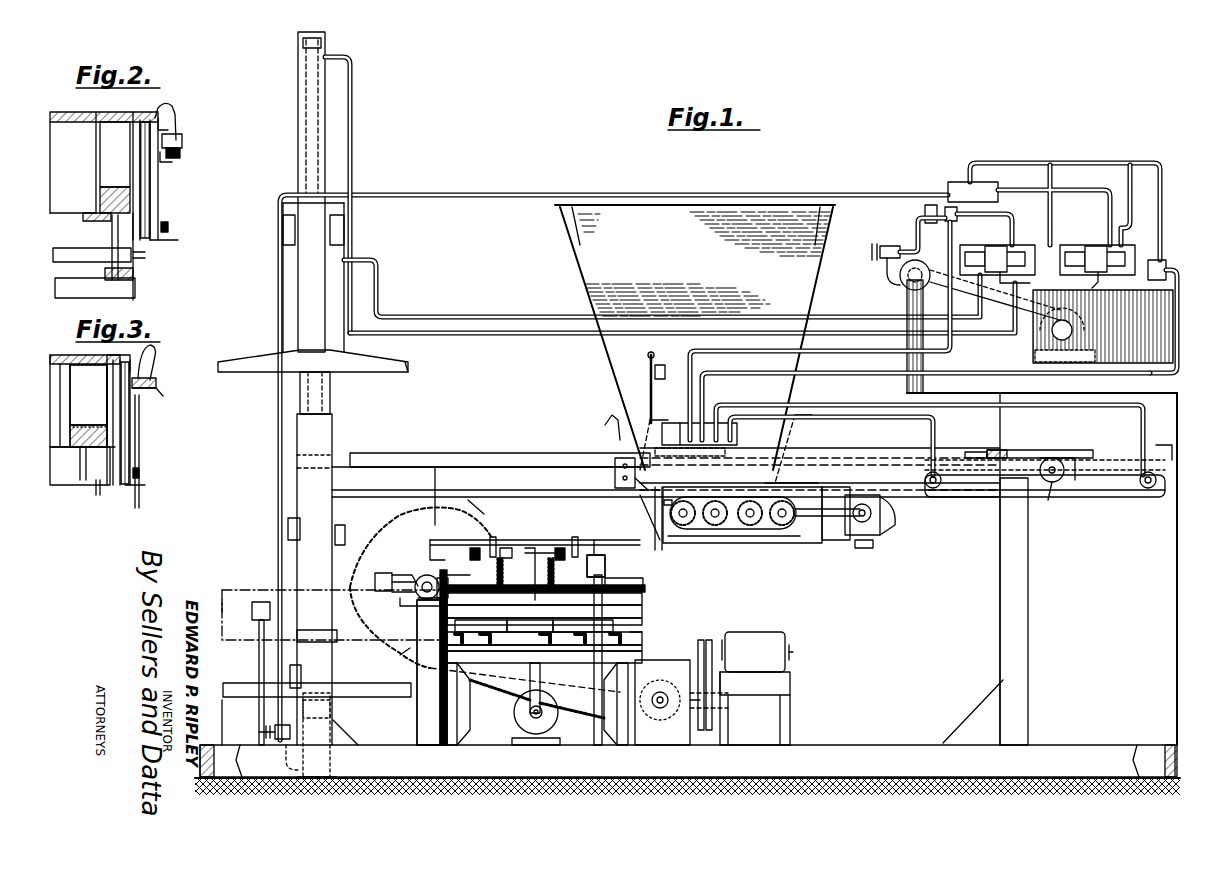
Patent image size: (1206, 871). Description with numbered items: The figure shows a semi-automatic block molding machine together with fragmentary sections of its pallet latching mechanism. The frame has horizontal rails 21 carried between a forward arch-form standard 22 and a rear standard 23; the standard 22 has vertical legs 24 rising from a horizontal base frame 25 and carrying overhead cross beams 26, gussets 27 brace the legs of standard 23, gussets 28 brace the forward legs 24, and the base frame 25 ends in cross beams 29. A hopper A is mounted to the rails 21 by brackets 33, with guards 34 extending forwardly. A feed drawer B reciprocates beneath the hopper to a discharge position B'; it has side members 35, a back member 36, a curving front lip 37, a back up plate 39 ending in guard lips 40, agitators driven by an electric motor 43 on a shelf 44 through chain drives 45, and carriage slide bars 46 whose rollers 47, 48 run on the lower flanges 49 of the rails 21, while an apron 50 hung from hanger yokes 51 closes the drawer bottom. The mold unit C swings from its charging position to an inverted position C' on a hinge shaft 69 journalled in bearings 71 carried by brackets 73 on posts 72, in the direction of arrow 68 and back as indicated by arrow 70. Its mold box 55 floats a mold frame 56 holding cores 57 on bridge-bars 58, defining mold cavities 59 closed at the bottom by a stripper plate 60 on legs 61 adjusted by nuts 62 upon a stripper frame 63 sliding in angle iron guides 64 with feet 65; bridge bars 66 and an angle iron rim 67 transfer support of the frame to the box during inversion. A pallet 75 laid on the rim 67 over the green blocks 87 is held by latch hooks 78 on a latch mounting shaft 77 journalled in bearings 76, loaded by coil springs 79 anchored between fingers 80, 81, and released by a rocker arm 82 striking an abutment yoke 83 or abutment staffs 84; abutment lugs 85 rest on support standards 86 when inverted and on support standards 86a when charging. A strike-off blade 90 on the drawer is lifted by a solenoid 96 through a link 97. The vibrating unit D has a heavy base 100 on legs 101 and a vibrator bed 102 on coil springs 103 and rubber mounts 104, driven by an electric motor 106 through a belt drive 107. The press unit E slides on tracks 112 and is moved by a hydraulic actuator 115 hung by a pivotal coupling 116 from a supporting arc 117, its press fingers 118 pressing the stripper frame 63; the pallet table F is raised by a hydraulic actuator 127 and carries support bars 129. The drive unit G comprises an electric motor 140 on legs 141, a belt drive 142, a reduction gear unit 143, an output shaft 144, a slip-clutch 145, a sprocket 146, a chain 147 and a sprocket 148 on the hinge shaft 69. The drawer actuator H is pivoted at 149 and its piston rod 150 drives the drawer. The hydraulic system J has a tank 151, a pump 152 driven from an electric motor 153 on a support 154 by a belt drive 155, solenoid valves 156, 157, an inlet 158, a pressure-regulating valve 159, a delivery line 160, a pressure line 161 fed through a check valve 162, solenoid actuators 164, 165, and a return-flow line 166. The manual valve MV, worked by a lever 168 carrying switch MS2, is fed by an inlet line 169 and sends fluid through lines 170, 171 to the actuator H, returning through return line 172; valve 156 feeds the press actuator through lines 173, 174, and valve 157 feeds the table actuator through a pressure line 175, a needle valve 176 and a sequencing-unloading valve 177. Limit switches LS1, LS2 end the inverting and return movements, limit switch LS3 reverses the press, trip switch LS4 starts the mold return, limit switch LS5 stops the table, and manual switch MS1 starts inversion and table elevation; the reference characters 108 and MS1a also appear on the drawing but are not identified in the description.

In FIG. 1, the table 21 is at (666, 472).
In FIG. 1, the column 22 is at (325, 440).
In FIG. 1, the upright 23 is at (1005, 572).
In FIG. 1, the column base 24 is at (300, 452).
In FIG. 1, the base frame 25 is at (815, 740).
In FIG. 1, the guide brackets 26 is at (283, 230).
In FIG. 1, the frame brace 27 is at (975, 722).
In FIG. 1, the brace 28 is at (338, 728).
In FIG. 1, the base end 29 is at (1166, 742).
In FIG. 1, the chute 33 is at (630, 448).
In FIG. 1, the guide rail 34 is at (436, 454).
In FIG. 1, the conveyor frame 35 is at (712, 540).
In FIG. 1, the gear box 36 is at (816, 545).
In FIG. 1, the conveyor end plate 37 is at (665, 548).
In FIG. 1, the rail 39 is at (1014, 450).
In FIG. 1, the stop 40 is at (968, 450).
In FIG. 1, the drive gear 43 is at (878, 535).
In FIG. 1, the drive housing 44 is at (895, 528).
In FIG. 1, the conveyor chain 45 is at (745, 498).
In FIG. 1, the roller 46 is at (1073, 455).
In FIG. 1, the guide 47 is at (660, 466).
In FIG. 1, the roller arm 48 is at (1049, 500).
In FIG. 1, the cylinder 49 is at (1078, 490).
In FIG. 1, the conveyor shaft 50 is at (740, 540).
In FIG. 1, the bearing 51 is at (860, 548).
In FIG. 2, the side wall 55 is at (158, 202).
In FIG. 3, the side wall 55 is at (130, 450).
In FIG. 1, the side wall 55 is at (630, 592).
In FIG. 2, the inner wall 56 is at (140, 180).
In FIG. 3, the inner wall 56 is at (110, 430).
In FIG. 2, the top plate 57 is at (88, 114).
In FIG. 3, the top plate 57 is at (58, 370).
In FIG. 2, the bottom plate 58 is at (83, 218).
In FIG. 3, the bottom plate 58 is at (55, 450).
In FIG. 2, the mold cavity 59 is at (115, 154).
In FIG. 3, the mold cavity 59 is at (70, 405).
In FIG. 2, the mold bottom 60 is at (115, 190).
In FIG. 3, the mold bottom 60 is at (70, 435).
In FIG. 2, the plunger rod 61 is at (112, 233).
In FIG. 3, the plunger rod 61 is at (80, 473).
In FIG. 2, the cross bar 62 is at (94, 273).
In FIG. 2, the support rod 63 is at (134, 291).
In FIG. 1, the support rod 63 is at (630, 612).
In FIG. 2, the bracket 64 is at (133, 274).
In FIG. 3, the bracket 64 is at (104, 494).
In FIG. 1, the bracket 64 is at (434, 657).
In FIG. 1, the plate 65 is at (630, 630).
In FIG. 2, the slide 66 is at (145, 255).
In FIG. 1, the slide 66 is at (624, 583).
In FIG. 2, the arm 67 is at (168, 122).
In FIG. 1, the arm 67 is at (458, 528).
In FIG. 1, the direction of travel 68 is at (484, 514).
In FIG. 1, the roller 69 is at (420, 580).
In FIG. 1, the lever 70 is at (222, 577).
In FIG. 1, the link 71 is at (432, 576).
In FIG. 1, the column 72 is at (417, 720).
In FIG. 1, the bar 73 is at (410, 578).
In FIG. 2, the carriage rail 75 is at (116, 112).
In FIG. 1, the carriage rail 75 is at (437, 538).
In FIG. 1, the clamp 76 is at (562, 546).
In FIG. 2, the block 77 is at (172, 160).
In FIG. 3, the block 77 is at (150, 380).
In FIG. 1, the block 77 is at (538, 548).
In FIG. 2, the hook finger 78 is at (172, 114).
In FIG. 3, the hook finger 78 is at (156, 354).
In FIG. 1, the hook finger 78 is at (575, 537).
In FIG. 2, the stop 79 is at (168, 228).
In FIG. 3, the stop 79 is at (139, 472).
In FIG. 1, the stop 79 is at (497, 568).
In FIG. 2, the bracket 80 is at (182, 136).
In FIG. 3, the bracket 80 is at (134, 366).
In FIG. 1, the bracket 80 is at (516, 547).
In FIG. 2, the bar 81 is at (178, 240).
In FIG. 3, the bar 81 is at (145, 486).
In FIG. 1, the bar 81 is at (545, 591).
In FIG. 2, the pin 82 is at (180, 150).
In FIG. 3, the pin 82 is at (156, 394).
In FIG. 1, the pin 82 is at (535, 546).
In FIG. 1, the plate 83 is at (325, 643).
In FIG. 3, the rod 84 is at (139, 506).
In FIG. 1, the rod 84 is at (554, 568).
In FIG. 1, the lever end 85 is at (603, 533).
In FIG. 1, the rod 86 is at (259, 658).
In FIG. 1, the rod 86a is at (594, 676).
In FIG. 3, the sand fill 87 is at (75, 352).
In FIG. 1, the cylinder 90 is at (605, 566).
In FIG. 1, the lever 96 is at (606, 422).
In FIG. 1, the link 97 is at (645, 512).
In FIG. 1, the platform 100 is at (630, 656).
In FIG. 1, the legs 101 is at (452, 716).
In FIG. 1, the mold section 102 is at (481, 626).
In FIG. 1, the mold section 103 is at (530, 626).
In FIG. 1, the mold section 104 is at (583, 626).
In FIG. 1, the cam wheel 106 is at (515, 722).
In FIG. 1, the connecting rod 107 is at (530, 678).
In FIG. 1, the column 108 is at (427, 672).
In FIG. 1, the piston rod 112 is at (325, 402).
In FIG. 1, the cylinder 115 is at (300, 87).
In FIG. 1, the cylinder head 116 is at (300, 47).
In FIG. 1, the cylinder 117 is at (308, 124).
In FIG. 1, the cross head 118 is at (262, 374).
In FIG. 1, the foot 127 is at (331, 735).
In FIG. 1, the bar 129 is at (380, 682).
In FIG. 1, the motor 140 is at (776, 632).
In FIG. 1, the motor base 141 is at (790, 706).
In FIG. 1, the pulley 142 is at (714, 632).
In FIG. 1, the gear box 143 is at (714, 650).
In FIG. 1, the shaft 144 is at (655, 710).
In FIG. 1, the belt 145 is at (724, 693).
In FIG. 1, the belt 146 is at (724, 709).
In FIG. 1, the arm 147 is at (375, 650).
In FIG. 1, the arc of travel 148 is at (404, 520).
In FIG. 1, the roller 149 is at (1160, 492).
In FIG. 1, the roller 150 is at (940, 490).
In FIG. 1, the cam plate 151 is at (1103, 326).
In FIG. 1, the pulley 152 is at (905, 292).
In FIG. 1, the pivot 153 is at (1075, 336).
In FIG. 1, the pipe 154 is at (1177, 378).
In FIG. 1, the slide 155 is at (1033, 342).
In FIG. 1, the valve 156 is at (1060, 246).
In FIG. 1, the valve 157 is at (1094, 246).
In FIG. 1, the pipe 158 is at (888, 280).
In FIG. 1, the valve 159 is at (886, 244).
In FIG. 1, the pipe 160 is at (918, 246).
In FIG. 1, the valve 161 is at (992, 245).
In FIG. 1, the fitting 162 is at (925, 212).
In FIG. 1, the valve stem 164 is at (1021, 269).
In FIG. 1, the valve stem 165 is at (1108, 286).
In FIG. 1, the pipe 166 is at (1162, 160).
In FIG. 1, the pipe 168 is at (648, 354).
In FIG. 1, the pipe 169 is at (855, 344).
In FIG. 1, the pipe 170 is at (838, 407).
In FIG. 1, the pipe 171 is at (872, 418).
In FIG. 1, the pipe 172 is at (878, 374).
In FIG. 1, the pipe 173 is at (558, 338).
In FIG. 1, the pipe 174 is at (562, 314).
In FIG. 1, the pipe 175 is at (278, 494).
In FIG. 1, the fitting 176 is at (262, 732).
In FIG. 1, the valve 177 is at (956, 182).
In FIG. 1, the hopper A is at (554, 271).
In FIG. 1, the conveyor B is at (742, 526).
In FIG. 1, the section line B' is at (418, 496).
In FIG. 1, the molding machine C is at (553, 582).
In FIG. 1, the section line C' is at (211, 604).
In FIG. 1, the mold D is at (638, 637).
In FIG. 1, the cross head E is at (418, 370).
In FIG. 1, the lever mechanism F is at (230, 701).
In FIG. 1, the motor drive G is at (801, 658).
In FIG. 1, the cylinder unit H is at (980, 516).
In FIG. 1, the control system J is at (1079, 153).
In FIG. 1, the limit switch LS1 is at (370, 576).
In FIG. 1, the limit switch LS2 is at (444, 580).
In FIG. 1, the limit switch LS3 is at (342, 530).
In FIG. 1, the limit switch LS4 is at (288, 534).
In FIG. 1, the limit switch LS5 is at (300, 672).
In FIG. 1, the micro switch MS1 is at (615, 466).
In FIG. 1, the micro switch MS1a is at (640, 488).
In FIG. 1, the micro switch MS2 is at (667, 366).
In FIG. 1, the motor valve MV is at (699, 434).